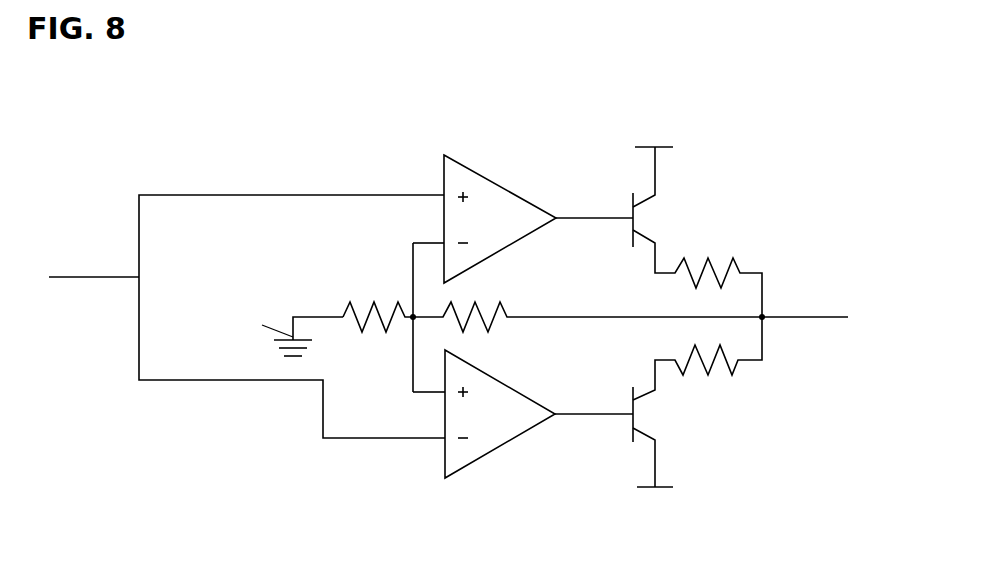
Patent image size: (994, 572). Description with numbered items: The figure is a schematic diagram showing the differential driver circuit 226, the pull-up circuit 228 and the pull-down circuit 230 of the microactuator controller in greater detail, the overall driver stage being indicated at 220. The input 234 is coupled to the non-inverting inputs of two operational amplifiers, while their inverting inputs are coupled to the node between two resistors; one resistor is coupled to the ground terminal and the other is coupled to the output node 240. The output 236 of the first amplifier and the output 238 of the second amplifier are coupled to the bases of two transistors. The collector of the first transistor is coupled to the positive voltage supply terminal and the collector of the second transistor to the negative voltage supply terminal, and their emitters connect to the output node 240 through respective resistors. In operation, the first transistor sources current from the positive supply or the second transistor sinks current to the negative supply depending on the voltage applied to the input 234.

The output driver circuit 220 is at (224, 438).
The differential driver circuit 226 is at (462, 129).
The pull-up circuit 228 is at (660, 102).
The pull-down circuit 230 is at (717, 444).
The input 234 is at (83, 277).
The output of amplifier U4 236 is at (580, 220).
The output of amplifier U5 238 is at (596, 413).
The output node 240 is at (762, 317).